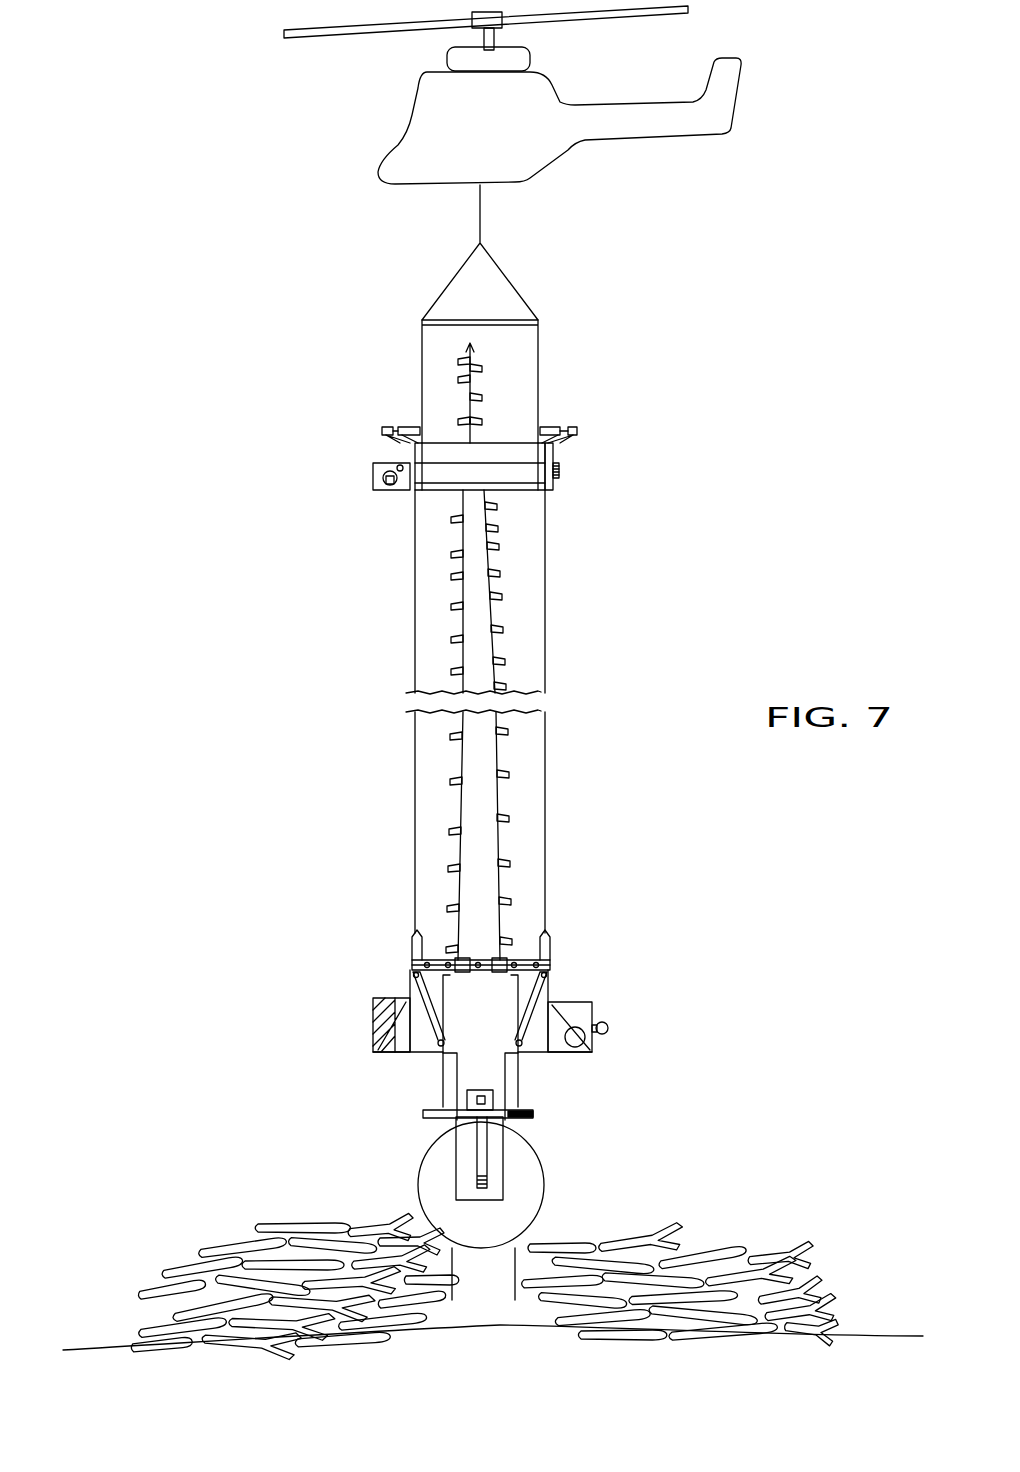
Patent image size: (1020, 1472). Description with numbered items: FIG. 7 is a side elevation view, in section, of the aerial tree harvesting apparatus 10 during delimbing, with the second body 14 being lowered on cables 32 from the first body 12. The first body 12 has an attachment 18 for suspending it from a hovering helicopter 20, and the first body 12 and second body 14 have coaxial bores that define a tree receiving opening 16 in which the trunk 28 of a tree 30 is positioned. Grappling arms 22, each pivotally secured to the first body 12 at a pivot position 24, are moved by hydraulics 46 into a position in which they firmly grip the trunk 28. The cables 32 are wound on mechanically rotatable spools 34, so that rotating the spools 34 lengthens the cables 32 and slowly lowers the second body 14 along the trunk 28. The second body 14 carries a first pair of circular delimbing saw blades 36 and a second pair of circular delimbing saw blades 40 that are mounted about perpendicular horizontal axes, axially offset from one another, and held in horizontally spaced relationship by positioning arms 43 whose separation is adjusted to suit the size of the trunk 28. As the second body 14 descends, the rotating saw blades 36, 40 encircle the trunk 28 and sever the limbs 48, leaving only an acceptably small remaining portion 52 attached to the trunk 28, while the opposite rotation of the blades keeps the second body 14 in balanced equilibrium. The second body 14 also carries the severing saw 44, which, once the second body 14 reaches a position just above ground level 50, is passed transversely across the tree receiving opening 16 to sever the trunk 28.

The aerial tree harvesting apparatus 10 is at (262, 790).
The first body 12 is at (598, 488).
The second body 14 is at (608, 1003).
The tree receiving opening 16 is at (483, 1052).
The attachment 18 is at (375, 475).
The helicopter 20 is at (392, 157).
The grappling arms 22 is at (497, 467).
The pivot position 24 is at (558, 470).
The trunk 28 is at (465, 887).
The tree 30 is at (437, 653).
The cables 32 is at (415, 800).
The spools 34 is at (413, 428).
The first pair of circular delimbing saw blades 36 is at (436, 1065).
The second pair of circular delimbing saw blades 40 is at (535, 1200).
The positioning arms 43 is at (410, 993).
The severing saw 44 is at (430, 1113).
The hydraulics 46 is at (552, 478).
The limbs 48 is at (220, 1240).
The ground level 50 is at (128, 1348).
The remaining portion 52 is at (505, 855).